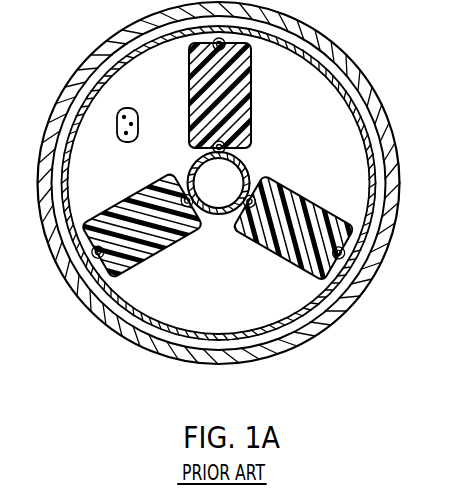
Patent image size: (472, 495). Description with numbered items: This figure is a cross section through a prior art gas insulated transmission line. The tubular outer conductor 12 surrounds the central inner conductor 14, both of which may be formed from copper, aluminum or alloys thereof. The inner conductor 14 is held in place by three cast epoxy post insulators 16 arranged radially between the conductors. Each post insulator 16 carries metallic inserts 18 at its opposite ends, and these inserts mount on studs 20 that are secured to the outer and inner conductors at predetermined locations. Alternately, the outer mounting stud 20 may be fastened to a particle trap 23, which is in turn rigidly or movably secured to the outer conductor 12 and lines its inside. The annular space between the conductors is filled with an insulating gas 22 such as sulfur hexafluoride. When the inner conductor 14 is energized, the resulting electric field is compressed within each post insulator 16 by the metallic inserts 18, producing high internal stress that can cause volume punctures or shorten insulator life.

The outer conductor 12 is at (363, 75).
The inner conductor 14 is at (247, 168).
The cast epoxy post insulator 16 is at (251, 100).
The metallic inserts 18 is at (240, 58).
The studs 20 is at (196, 187).
The insulating gas 22 is at (140, 126).
The particle trap 23 is at (381, 130).